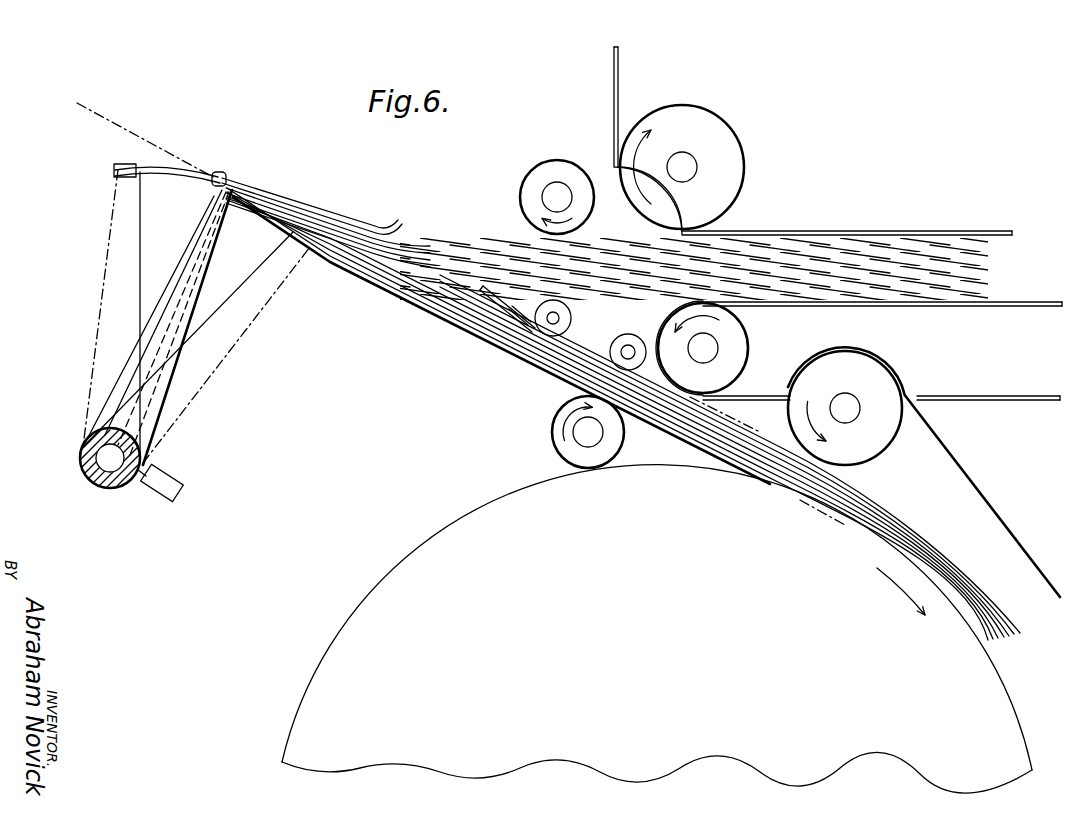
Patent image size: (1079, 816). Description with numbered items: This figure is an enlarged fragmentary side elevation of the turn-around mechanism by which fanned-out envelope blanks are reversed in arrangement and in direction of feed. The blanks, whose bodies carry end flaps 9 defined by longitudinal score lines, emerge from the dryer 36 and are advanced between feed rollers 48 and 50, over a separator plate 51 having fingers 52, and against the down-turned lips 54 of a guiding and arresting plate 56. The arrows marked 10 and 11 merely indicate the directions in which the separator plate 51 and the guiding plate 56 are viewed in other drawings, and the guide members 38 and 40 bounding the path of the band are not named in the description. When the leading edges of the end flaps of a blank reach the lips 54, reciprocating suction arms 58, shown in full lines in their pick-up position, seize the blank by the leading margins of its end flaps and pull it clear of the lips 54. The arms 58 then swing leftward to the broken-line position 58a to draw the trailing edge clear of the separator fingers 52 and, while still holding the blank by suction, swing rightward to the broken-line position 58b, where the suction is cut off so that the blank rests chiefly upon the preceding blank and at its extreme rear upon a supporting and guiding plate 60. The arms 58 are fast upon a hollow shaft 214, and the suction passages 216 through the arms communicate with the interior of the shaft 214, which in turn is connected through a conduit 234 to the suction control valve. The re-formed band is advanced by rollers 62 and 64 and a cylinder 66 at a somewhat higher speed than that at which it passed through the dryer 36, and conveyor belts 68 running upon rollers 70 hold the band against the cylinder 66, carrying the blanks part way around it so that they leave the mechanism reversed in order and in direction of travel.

The end flaps 9 is at (497, 339).
The section line 10- 10 is at (177, 143).
The section line 11- 11 is at (88, 127).
The dryer 36 is at (950, 222).
The upper guide plate 38 is at (838, 232).
The guide plate 40 is at (1008, 308).
The feed roller 48 is at (557, 162).
The feed roller 50 is at (566, 312).
The separator plate 51 is at (512, 337).
The fingers 52 is at (483, 288).
The down turned lips 54 is at (218, 172).
The guiding and arresting plate 56 is at (294, 188).
The reciprocating suction arms 58 is at (160, 300).
The broken line position of suction arms 58a is at (121, 225).
The broken line position of suction arms 58b is at (228, 349).
The supporting and guiding plate 60 is at (352, 274).
The roller 62 is at (628, 334).
The roller 64 is at (555, 420).
The cylinder 66 is at (390, 582).
The conveyor belts 68 is at (985, 508).
The roller 70 is at (872, 370).
The hollow shaft 214 is at (86, 456).
The suction passages 216 is at (197, 250).
The conduit 234 is at (165, 481).